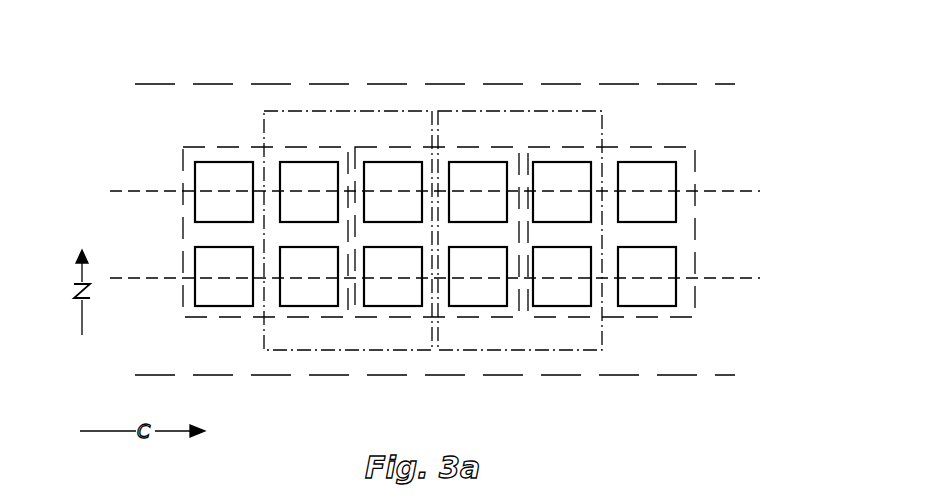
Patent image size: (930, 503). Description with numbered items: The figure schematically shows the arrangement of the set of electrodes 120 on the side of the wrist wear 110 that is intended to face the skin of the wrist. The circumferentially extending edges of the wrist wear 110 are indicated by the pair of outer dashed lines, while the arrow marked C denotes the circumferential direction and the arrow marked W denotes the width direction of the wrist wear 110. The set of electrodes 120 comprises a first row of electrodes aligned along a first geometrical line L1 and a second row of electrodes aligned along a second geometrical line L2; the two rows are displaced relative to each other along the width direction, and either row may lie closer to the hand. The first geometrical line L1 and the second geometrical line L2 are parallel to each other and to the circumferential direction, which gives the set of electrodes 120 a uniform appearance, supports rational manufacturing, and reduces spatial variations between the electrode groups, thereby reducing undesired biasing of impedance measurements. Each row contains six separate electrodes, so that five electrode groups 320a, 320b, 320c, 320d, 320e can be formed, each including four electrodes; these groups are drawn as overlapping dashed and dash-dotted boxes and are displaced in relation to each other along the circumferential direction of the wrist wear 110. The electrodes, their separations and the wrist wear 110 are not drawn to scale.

The set of electrodes 120 is at (100, 93).
The wrist wear 110 is at (657, 377).
The first geometrical line L1 is at (748, 193).
The second geometrical line L2 is at (748, 280).
The electrode group 320a is at (256, 147).
The electrode group 320b is at (345, 111).
The electrode group 320c is at (425, 147).
The electrode group 320d is at (525, 112).
The electrode group 320e is at (620, 147).